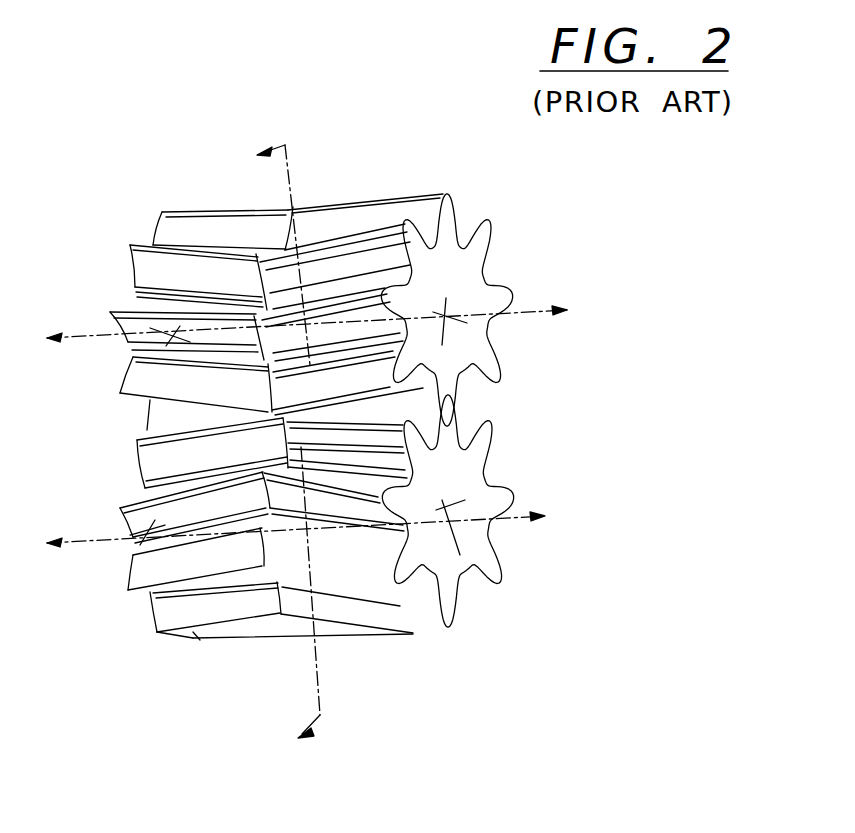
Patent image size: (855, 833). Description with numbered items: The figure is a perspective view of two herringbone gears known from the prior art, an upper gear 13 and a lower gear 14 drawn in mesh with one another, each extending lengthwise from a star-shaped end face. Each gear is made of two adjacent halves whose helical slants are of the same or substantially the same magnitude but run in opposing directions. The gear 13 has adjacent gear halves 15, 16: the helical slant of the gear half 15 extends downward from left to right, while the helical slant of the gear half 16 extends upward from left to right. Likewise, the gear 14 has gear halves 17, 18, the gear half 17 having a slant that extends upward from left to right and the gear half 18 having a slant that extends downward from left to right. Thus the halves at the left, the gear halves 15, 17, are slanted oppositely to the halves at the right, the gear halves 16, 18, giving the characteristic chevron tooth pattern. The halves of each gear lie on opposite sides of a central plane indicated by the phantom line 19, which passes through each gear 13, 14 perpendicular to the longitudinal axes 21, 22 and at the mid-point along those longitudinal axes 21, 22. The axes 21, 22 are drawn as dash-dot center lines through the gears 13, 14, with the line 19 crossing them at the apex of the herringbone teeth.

The gear 13 is at (311, 251).
The gear 14 is at (317, 569).
The gear half 15 is at (238, 210).
The gear half 16 is at (393, 197).
The gear half 17 is at (260, 640).
The gear half 18 is at (405, 637).
The central plane line 19 is at (290, 184).
The longitudinal axis 21 is at (532, 310).
The longitudinal axis 22 is at (520, 515).